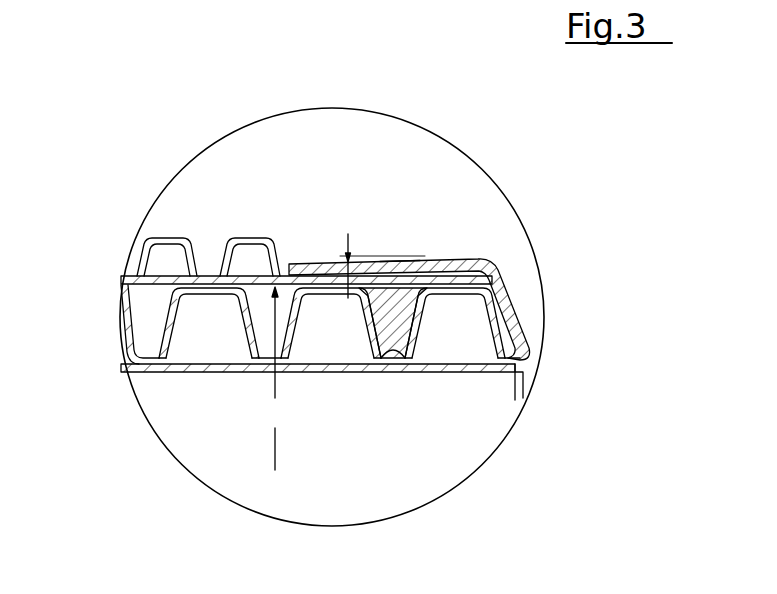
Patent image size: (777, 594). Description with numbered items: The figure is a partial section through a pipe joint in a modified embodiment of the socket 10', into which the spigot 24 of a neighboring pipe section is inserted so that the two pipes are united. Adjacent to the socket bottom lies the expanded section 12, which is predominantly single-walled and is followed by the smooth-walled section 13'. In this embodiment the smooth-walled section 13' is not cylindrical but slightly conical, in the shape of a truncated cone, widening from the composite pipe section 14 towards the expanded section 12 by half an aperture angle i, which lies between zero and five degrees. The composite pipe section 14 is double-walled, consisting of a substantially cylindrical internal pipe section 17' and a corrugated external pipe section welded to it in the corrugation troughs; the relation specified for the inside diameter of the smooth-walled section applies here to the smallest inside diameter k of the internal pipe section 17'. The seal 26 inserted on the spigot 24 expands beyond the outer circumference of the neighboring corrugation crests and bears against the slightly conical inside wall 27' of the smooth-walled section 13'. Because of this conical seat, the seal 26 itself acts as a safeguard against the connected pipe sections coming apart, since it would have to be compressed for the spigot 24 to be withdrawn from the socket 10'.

The socket 10' is at (318, 227).
The composite pipe section 14 is at (165, 231).
The internal pipe section 17' is at (103, 370).
The spigot 24 is at (236, 378).
The expanded section 12 is at (500, 263).
The smooth-walled section 13' is at (436, 159).
The inside wall 27' is at (464, 235).
The seal 26 is at (393, 313).
The smallest inside diameter k is at (274, 378).
The half aperture angle i is at (377, 266).